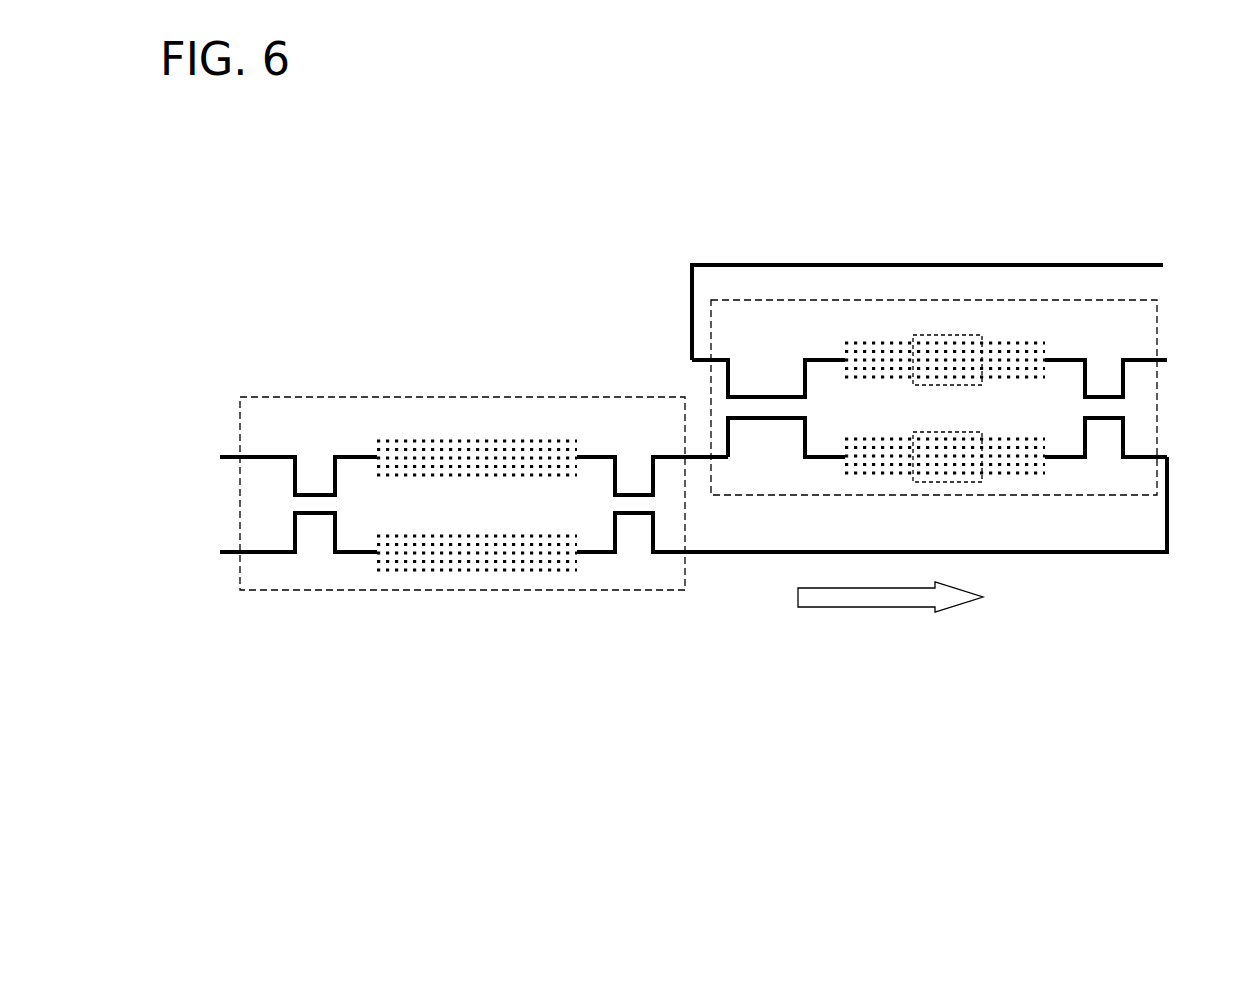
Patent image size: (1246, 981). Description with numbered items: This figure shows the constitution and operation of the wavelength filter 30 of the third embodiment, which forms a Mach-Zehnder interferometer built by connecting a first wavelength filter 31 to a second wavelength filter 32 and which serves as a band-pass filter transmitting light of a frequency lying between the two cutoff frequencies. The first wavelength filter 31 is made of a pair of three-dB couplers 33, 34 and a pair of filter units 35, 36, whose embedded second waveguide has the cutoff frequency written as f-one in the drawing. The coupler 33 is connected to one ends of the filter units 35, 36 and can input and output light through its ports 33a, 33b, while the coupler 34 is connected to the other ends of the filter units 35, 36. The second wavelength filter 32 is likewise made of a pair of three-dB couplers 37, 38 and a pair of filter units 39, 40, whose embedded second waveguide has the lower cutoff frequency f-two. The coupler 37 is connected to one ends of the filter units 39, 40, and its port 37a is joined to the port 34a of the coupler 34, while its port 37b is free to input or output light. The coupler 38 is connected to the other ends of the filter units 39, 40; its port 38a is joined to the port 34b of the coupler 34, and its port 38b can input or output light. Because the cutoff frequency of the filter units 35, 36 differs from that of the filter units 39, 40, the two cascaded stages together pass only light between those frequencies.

The wavelength filter 30 is at (888, 664).
The first wavelength filter 31 is at (405, 592).
The second wavelength filter 32 is at (848, 300).
The 3 dB coupler 33 is at (298, 553).
The port 33a is at (250, 455).
The port 33b is at (257, 553).
The 3 dB coupler 34 is at (617, 553).
The port 34a is at (684, 403).
The port 34b is at (665, 553).
The filter unit 35 is at (392, 438).
The filter unit 36 is at (497, 573).
The 3 dB coupler 37 is at (742, 497).
The port 37a is at (714, 500).
The port 37b is at (697, 358).
The 3 dB coupler 38 is at (1100, 497).
The port 38a is at (1142, 478).
The port 38b is at (1150, 358).
The filter unit 39 is at (1040, 340).
The filter unit 40 is at (1033, 484).